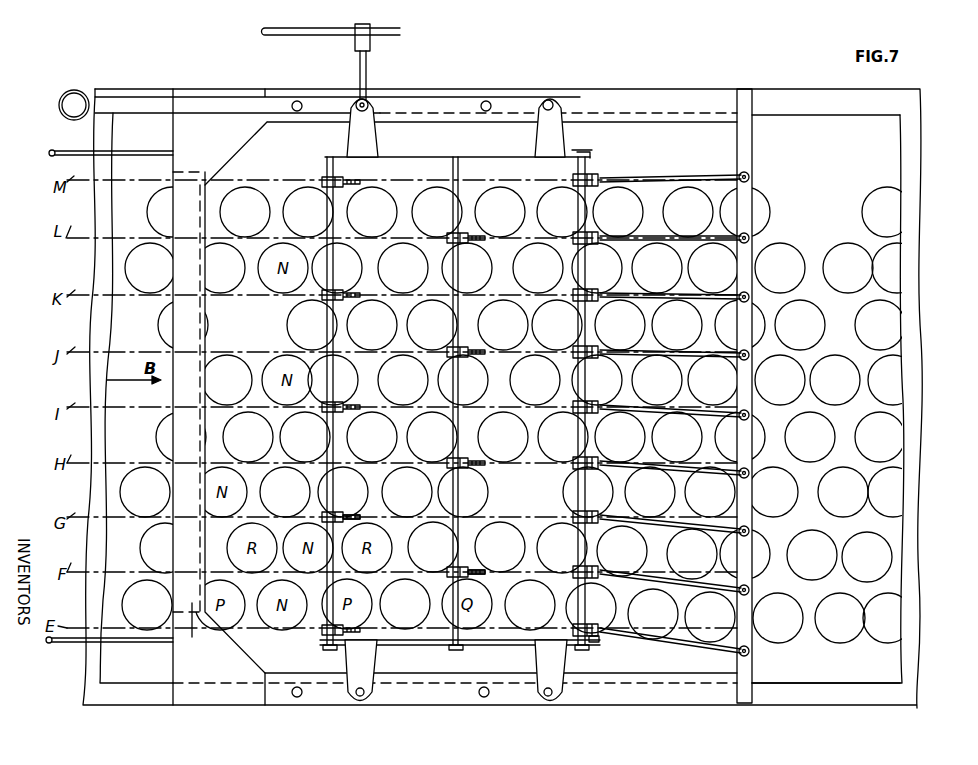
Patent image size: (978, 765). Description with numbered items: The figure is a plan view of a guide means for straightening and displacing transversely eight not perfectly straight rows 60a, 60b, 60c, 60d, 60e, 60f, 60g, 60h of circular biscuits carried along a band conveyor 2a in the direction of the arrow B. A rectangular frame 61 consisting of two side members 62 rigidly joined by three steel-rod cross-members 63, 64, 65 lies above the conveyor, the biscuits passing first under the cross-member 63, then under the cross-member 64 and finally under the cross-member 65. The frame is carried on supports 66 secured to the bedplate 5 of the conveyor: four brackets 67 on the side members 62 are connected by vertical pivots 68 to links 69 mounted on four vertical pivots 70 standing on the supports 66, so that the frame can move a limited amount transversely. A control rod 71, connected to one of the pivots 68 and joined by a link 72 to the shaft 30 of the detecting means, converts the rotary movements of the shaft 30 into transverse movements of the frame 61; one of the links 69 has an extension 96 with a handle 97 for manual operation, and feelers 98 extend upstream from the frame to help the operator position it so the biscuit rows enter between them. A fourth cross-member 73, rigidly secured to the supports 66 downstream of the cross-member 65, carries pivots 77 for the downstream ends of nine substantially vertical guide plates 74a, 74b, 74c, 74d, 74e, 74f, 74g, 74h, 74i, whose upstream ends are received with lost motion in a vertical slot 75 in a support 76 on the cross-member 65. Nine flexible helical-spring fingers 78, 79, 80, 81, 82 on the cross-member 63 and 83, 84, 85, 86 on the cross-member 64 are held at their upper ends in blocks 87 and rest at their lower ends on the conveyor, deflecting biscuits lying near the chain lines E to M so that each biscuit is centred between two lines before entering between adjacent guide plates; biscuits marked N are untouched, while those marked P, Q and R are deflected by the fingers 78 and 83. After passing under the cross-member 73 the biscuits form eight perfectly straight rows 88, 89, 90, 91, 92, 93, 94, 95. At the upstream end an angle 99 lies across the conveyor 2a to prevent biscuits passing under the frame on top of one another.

The shaft 30 is at (280, 35).
The link 72 is at (356, 41).
The control rod 71 is at (368, 63).
The handle 97 is at (72, 90).
The extension 96 is at (201, 104).
The vertical pivot 70 is at (297, 101).
The link 69 is at (322, 102).
The vertical pivot 68 is at (369, 101).
The bracket 67 is at (456, 400).
The side member 62 is at (497, 155).
The frame 61 is at (603, 151).
The support 66 is at (686, 97).
The fourth cross-member 73 is at (753, 150).
The pivot 77 is at (750, 594).
The flexible metallic finger 82 is at (352, 183).
The flexible metallic finger 81 is at (348, 290).
The flexible metallic finger 80 is at (348, 401).
The flexible metallic finger 79 is at (346, 512).
The flexible metallic finger 78 is at (358, 628).
The flexible metallic finger 86 is at (483, 235).
The flexible metallic finger 85 is at (485, 348).
The flexible metallic finger 84 is at (485, 459).
The flexible metallic finger 83 is at (483, 568).
The block 87 is at (322, 515).
The guide plate 74a is at (712, 646).
The guide plate 74b is at (700, 574).
The guide plate 74c is at (718, 518).
The guide plate 74d is at (695, 462).
The guide plate 74e is at (710, 406).
The guide plate 74f is at (692, 350).
The guide plate 74g is at (705, 293).
The guide plate 74h is at (703, 235).
The guide plate 74i is at (722, 172).
The vertical slot 75 is at (600, 629).
The support 76 is at (606, 641).
The cross-member 65 is at (583, 649).
The cross-member 64 is at (455, 646).
The cross-member 63 is at (325, 647).
The angle 99 is at (219, 422).
The feeler 98 is at (52, 150).
The straight row of biscuits 95 is at (912, 216).
The straight row of biscuits 94 is at (912, 272).
The straight row of biscuits 93 is at (912, 329).
The straight row of biscuits 92 is at (912, 385).
The straight row of biscuits 91 is at (912, 441).
The straight row of biscuits 90 is at (912, 496).
The straight row of biscuits 89 is at (912, 564).
The straight row of biscuits 88 is at (912, 618).
The band conveyor 2a is at (912, 668).
The bedplate 5 is at (912, 697).
The row of biscuits 60a is at (122, 605).
The row of biscuits 60b is at (155, 548).
The row of biscuits 60c is at (120, 493).
The row of biscuits 60d is at (157, 437).
The row of biscuits 60e is at (205, 383).
The row of biscuits 60f is at (158, 326).
The row of biscuits 60g is at (125, 271).
The row of biscuits 60h is at (148, 213).